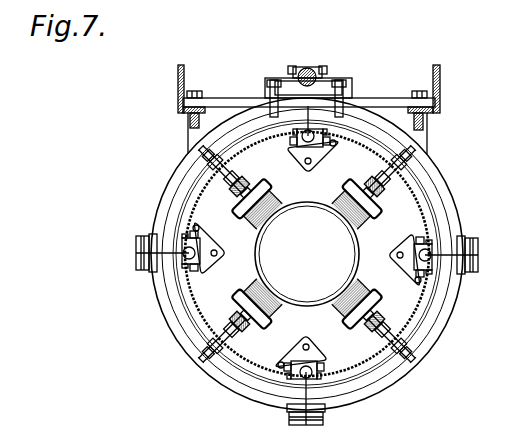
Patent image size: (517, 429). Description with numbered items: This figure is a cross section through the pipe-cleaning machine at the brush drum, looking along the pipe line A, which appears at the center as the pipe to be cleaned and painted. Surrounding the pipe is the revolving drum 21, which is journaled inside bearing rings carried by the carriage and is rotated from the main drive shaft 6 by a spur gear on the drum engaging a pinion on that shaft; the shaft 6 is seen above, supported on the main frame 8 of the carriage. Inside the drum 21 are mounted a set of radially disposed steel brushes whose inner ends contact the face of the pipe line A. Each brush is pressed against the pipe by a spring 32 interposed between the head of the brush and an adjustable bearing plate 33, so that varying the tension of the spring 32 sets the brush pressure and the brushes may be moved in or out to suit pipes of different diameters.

The main drive shaft 6 is at (308, 77).
The main frame 8 is at (322, 109).
The drum 21 is at (274, 254).
The spring 32 is at (297, 265).
The adjustable bearing plate 33 is at (425, 351).
The pipe line A is at (307, 254).